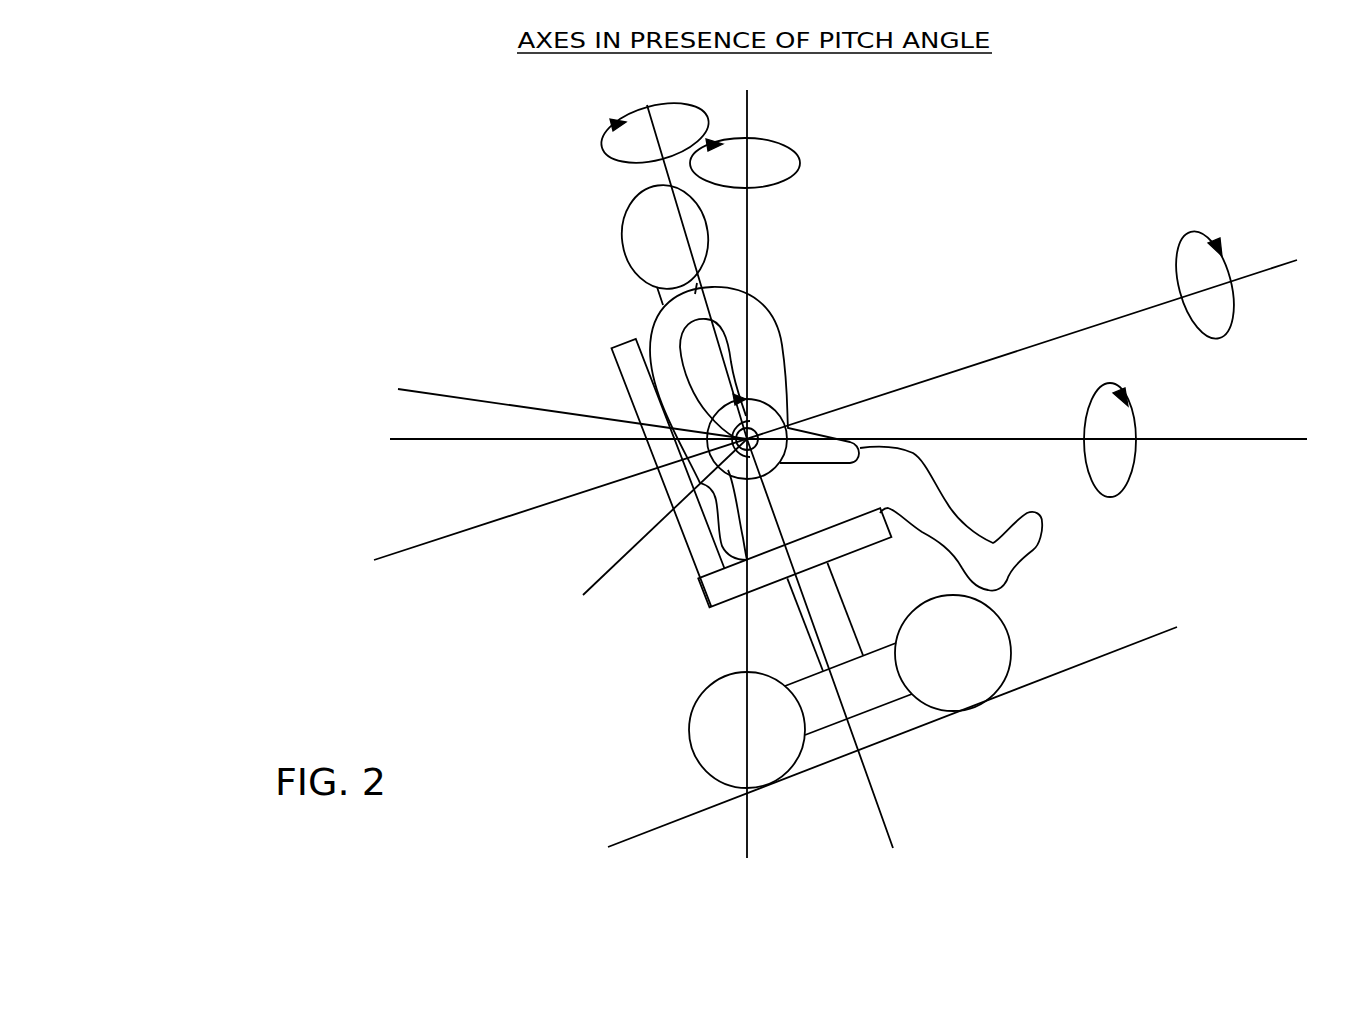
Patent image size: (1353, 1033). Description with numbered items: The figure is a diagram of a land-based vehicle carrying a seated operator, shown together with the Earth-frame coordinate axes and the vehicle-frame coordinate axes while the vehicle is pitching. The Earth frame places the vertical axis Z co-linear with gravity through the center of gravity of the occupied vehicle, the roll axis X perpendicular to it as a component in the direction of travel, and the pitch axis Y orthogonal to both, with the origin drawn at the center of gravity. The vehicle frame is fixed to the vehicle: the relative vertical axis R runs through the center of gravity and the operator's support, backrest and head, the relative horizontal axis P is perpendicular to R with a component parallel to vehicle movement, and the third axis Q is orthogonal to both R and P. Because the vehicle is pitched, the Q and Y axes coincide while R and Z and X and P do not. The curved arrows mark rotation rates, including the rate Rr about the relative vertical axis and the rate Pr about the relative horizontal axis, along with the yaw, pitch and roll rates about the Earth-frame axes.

The vertical axis Z is at (760, 471).
The roll axis X is at (864, 444).
The pitch axis Y is at (651, 526).
The relative horizontal axis P is at (833, 410).
The third axis Q is at (460, 417).
The relative vertical axis R is at (785, 484).
The rotation rate about relative vertical axis Rr is at (618, 164).
The rotation rate about relative horizontal axis Pr is at (1233, 308).